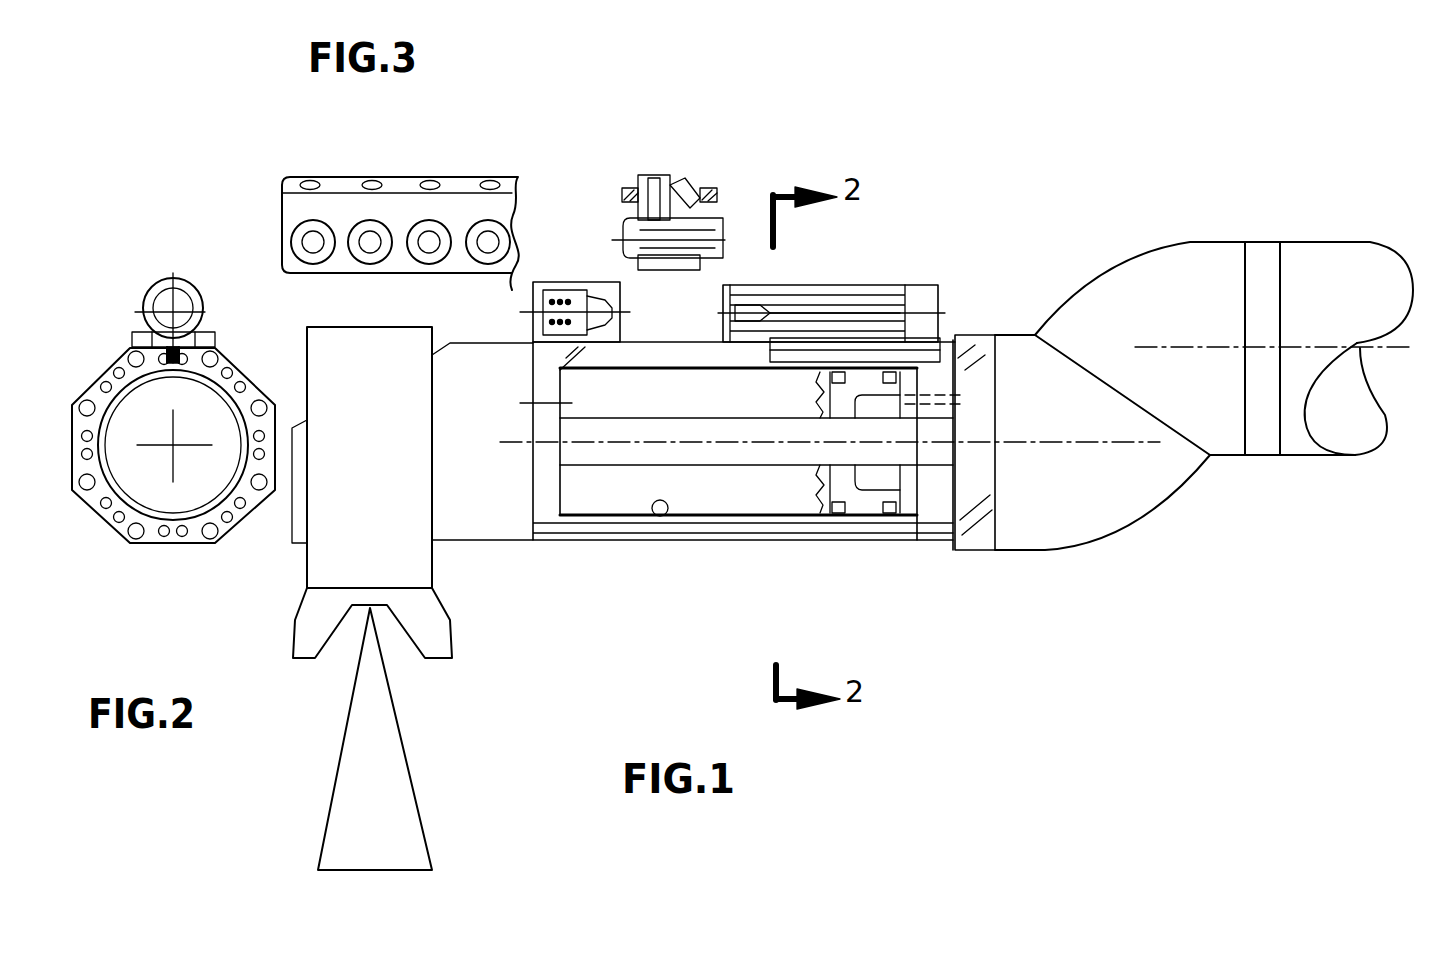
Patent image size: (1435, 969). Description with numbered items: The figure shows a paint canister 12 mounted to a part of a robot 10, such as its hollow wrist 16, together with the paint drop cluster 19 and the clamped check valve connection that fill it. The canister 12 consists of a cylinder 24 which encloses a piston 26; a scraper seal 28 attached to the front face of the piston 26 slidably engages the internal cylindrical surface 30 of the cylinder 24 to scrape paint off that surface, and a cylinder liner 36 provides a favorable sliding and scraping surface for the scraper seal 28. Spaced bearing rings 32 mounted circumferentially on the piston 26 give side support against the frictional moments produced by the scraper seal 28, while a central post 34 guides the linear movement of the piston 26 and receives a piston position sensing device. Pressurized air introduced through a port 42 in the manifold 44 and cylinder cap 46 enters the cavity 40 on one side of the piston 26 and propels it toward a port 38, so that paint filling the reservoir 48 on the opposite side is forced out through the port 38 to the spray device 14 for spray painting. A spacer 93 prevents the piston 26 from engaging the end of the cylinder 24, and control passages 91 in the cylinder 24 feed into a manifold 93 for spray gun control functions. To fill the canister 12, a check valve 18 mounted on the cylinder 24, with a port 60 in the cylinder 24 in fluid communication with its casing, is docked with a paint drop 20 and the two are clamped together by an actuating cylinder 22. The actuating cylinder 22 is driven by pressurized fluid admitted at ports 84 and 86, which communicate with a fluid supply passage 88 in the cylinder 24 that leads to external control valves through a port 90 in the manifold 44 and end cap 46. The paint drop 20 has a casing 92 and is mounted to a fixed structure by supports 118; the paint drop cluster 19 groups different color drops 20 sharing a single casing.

In FIG. 1, the robot 10 is at (1083, 570).
In FIG. 2, the canister 12 is at (193, 575).
In FIG. 1, the canister 12 is at (732, 560).
In FIG. 1, the spray device 14 is at (297, 563).
In FIG. 1, the hollow wrist 16 is at (1090, 278).
In FIG. 1, the check valve 18 is at (560, 272).
In FIG. 3, the paint drop cluster 19 is at (374, 168).
In FIG. 3, the paint drop 20 is at (428, 178).
In FIG. 1, the paint drop 20 is at (668, 162).
In FIG. 2, the actuating cylinder 22 is at (154, 272).
In FIG. 1, the actuating cylinder 22 is at (872, 275).
In FIG. 1, the cylinder 24 is at (808, 543).
In FIG. 1, the piston 26 is at (858, 540).
In FIG. 1, the scraper seal 28 is at (812, 490).
In FIG. 1, the internal cylindrical surface 30 is at (660, 516).
In FIG. 1, the bearing rings 32 is at (893, 530).
In FIG. 1, the central post 34 is at (680, 465).
In FIG. 2, the cylinder liner 36 is at (128, 532).
In FIG. 1, the cylinder liner 36 is at (580, 520).
In FIG. 1, the port 38 is at (548, 492).
In FIG. 1, the cavity 40 is at (910, 530).
In FIG. 1, the port 42 is at (992, 414).
In FIG. 1, the manifold 44 is at (973, 550).
In FIG. 1, the cylinder cap 46 is at (947, 542).
In FIG. 2, the reservoir 48 is at (127, 475).
In FIG. 1, the reservoir 48 is at (558, 405).
In FIG. 1, the port 60 is at (585, 370).
In FIG. 2, the port 84 is at (195, 335).
In FIG. 2, the port 86 is at (160, 333).
In FIG. 2, the passage 88 is at (128, 362).
In FIG. 1, the passage 88 is at (792, 358).
In FIG. 1, the port 90 is at (967, 358).
In FIG. 2, the control passages 91 is at (185, 548).
In FIG. 1, the control passages 91 is at (615, 528).
In FIG. 1, the casing 92 is at (673, 268).
In FIG. 1, the manifold 93 is at (453, 545).
In FIG. 1, the supports 118 is at (718, 190).